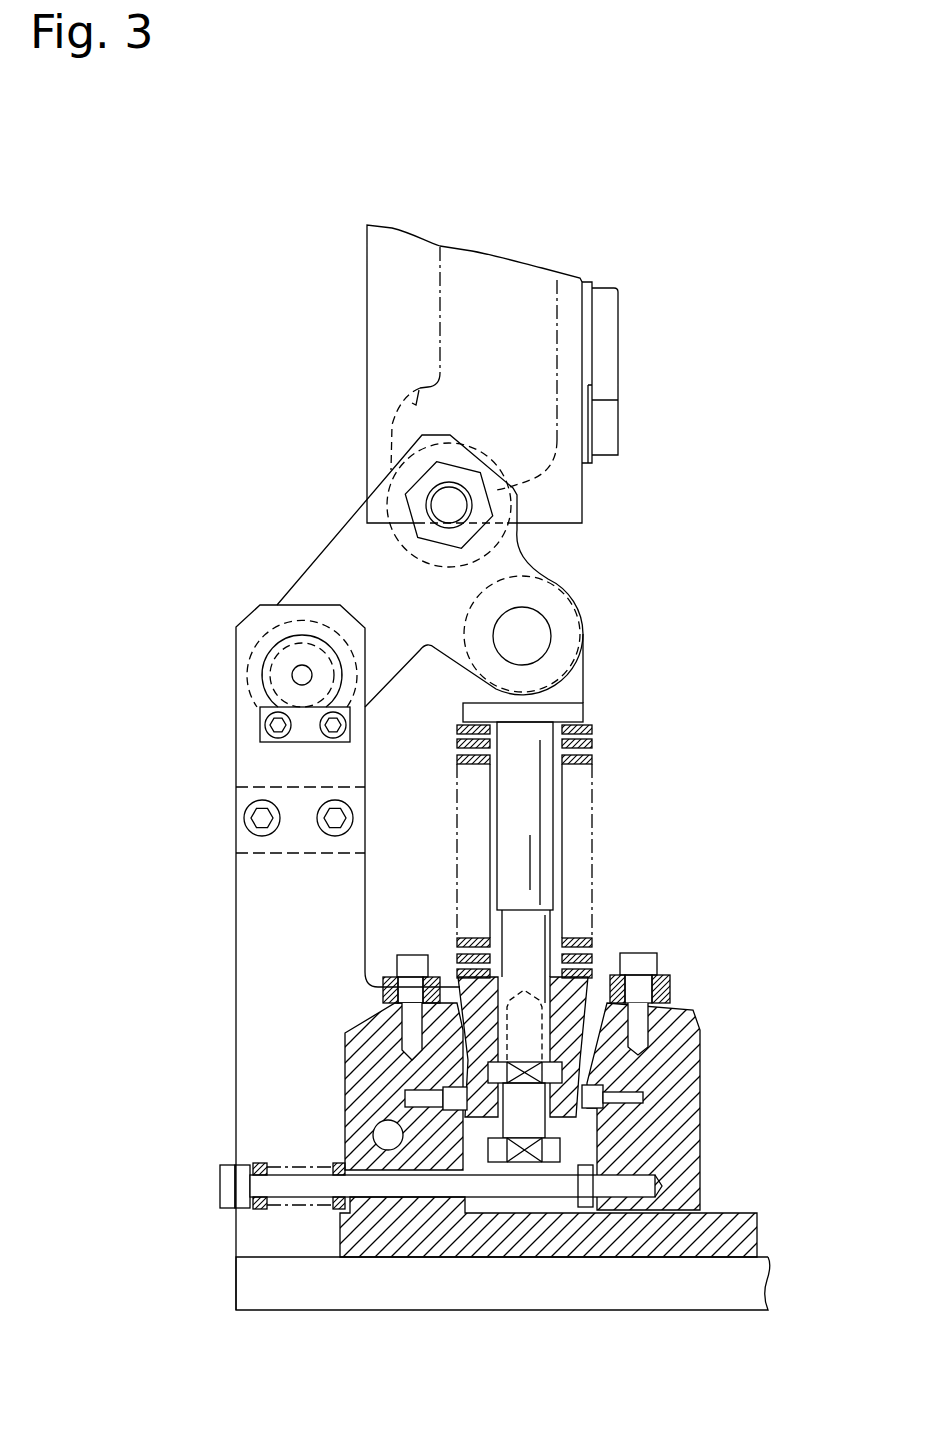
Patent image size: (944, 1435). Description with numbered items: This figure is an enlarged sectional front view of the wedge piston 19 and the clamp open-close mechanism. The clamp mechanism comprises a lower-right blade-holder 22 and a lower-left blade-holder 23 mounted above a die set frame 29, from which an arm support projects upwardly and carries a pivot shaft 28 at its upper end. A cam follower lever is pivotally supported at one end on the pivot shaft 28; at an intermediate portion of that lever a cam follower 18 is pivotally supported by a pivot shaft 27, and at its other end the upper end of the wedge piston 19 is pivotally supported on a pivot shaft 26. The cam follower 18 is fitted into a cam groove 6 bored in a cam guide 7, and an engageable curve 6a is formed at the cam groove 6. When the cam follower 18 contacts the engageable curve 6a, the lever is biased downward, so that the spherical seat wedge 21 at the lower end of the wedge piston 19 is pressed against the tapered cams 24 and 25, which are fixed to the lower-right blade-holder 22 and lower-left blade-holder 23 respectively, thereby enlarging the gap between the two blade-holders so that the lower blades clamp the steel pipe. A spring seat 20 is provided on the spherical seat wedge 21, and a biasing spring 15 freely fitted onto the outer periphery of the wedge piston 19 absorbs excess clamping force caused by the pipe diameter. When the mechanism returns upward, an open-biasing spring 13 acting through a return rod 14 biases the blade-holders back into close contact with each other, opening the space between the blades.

The cam groove 6 is at (440, 344).
The engageable curve 6a is at (412, 403).
The cam guide 7 is at (366, 289).
The open-biasing spring 13 is at (332, 1163).
The return rod 14 is at (297, 1187).
The biasing spring 15 is at (460, 775).
The cam follower 18 is at (432, 581).
The wedge piston 19 is at (538, 797).
The spring seat 20 is at (588, 983).
The spherical seat wedge 21 is at (562, 1108).
The lower-right blade-holder 22 is at (370, 1063).
The lower-left blade-holder 23 is at (680, 1077).
The tapered cam 24 is at (458, 977).
The tapered cam 25 is at (607, 1037).
The pivot shaft 26 is at (551, 637).
The pivot shaft 27 is at (450, 498).
The pivot shaft 28 is at (290, 653).
The die set frame 29 is at (475, 1292).